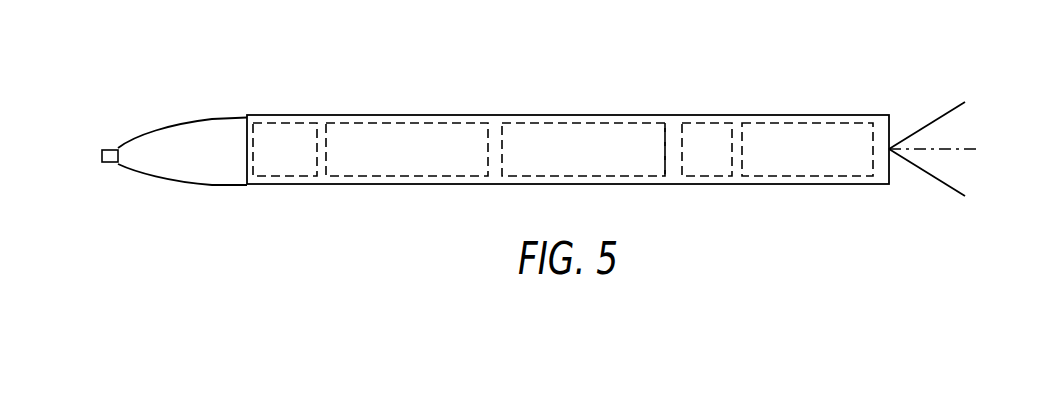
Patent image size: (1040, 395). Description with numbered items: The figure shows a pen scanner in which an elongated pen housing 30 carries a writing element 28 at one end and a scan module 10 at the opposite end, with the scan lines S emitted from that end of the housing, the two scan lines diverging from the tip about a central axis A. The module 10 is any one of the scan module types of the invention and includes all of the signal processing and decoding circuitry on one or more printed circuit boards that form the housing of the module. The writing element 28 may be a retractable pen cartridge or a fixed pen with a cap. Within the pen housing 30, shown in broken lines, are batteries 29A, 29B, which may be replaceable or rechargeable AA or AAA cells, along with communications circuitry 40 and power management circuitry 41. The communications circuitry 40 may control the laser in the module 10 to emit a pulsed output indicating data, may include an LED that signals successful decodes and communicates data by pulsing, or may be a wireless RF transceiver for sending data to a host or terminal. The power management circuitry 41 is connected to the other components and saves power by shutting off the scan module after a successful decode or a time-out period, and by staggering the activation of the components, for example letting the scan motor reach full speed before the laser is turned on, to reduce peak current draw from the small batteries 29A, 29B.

The module 10 is at (810, 125).
The writing element 28 is at (190, 230).
The power management circuitry 41 is at (302, 112).
The battery 29B is at (441, 125).
The battery 29A is at (565, 120).
The pen housing 30 is at (664, 115).
The communications circuitry 40 is at (698, 115).
The scan lines S is at (952, 110).
The axis A is at (970, 147).